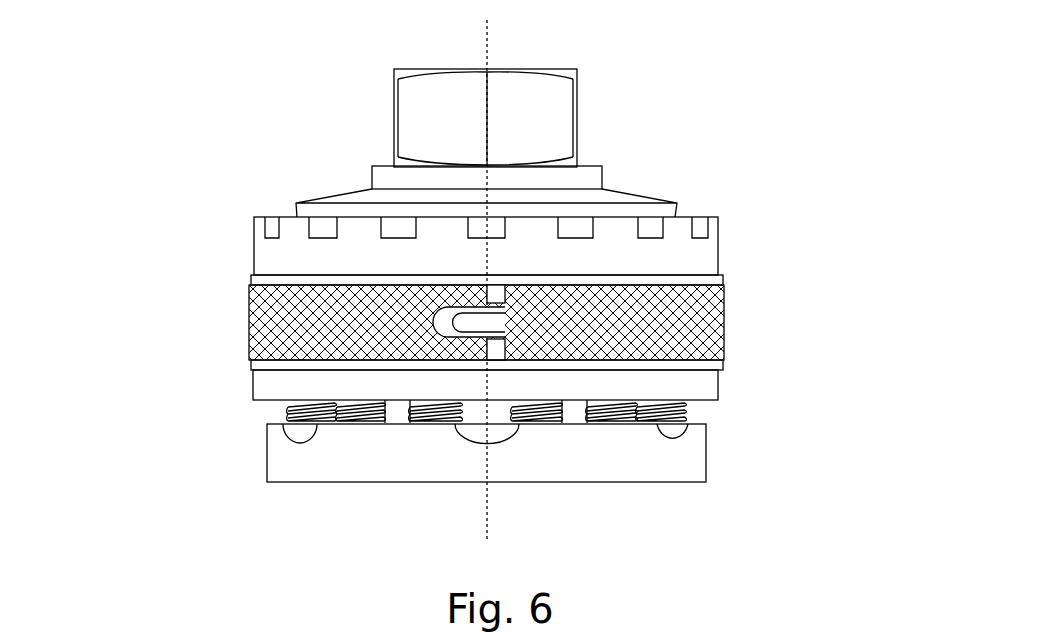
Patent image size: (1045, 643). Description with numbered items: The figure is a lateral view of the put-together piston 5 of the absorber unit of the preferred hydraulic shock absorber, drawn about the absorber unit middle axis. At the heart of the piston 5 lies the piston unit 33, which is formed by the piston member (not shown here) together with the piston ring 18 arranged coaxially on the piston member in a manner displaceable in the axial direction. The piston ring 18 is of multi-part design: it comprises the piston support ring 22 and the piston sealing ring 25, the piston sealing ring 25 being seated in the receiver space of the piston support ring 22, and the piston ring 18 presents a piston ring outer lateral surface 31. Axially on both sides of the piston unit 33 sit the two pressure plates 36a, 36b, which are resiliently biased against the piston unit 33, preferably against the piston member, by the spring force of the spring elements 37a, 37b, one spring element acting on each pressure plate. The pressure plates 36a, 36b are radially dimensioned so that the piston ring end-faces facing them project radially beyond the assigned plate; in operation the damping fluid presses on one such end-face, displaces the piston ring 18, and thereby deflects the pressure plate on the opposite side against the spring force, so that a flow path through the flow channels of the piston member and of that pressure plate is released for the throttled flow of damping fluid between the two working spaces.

The piston 5 is at (489, 282).
The piston ring 18 is at (461, 282).
The piston support ring 22 is at (238, 368).
The piston sealing ring 25 is at (743, 328).
The piston ring outer lateral surface 31 is at (479, 322).
The piston unit 33 is at (561, 457).
The pressure plate 36a is at (735, 245).
The pressure plate 36b is at (728, 387).
The spring element 37a is at (642, 179).
The spring element 37b is at (212, 447).